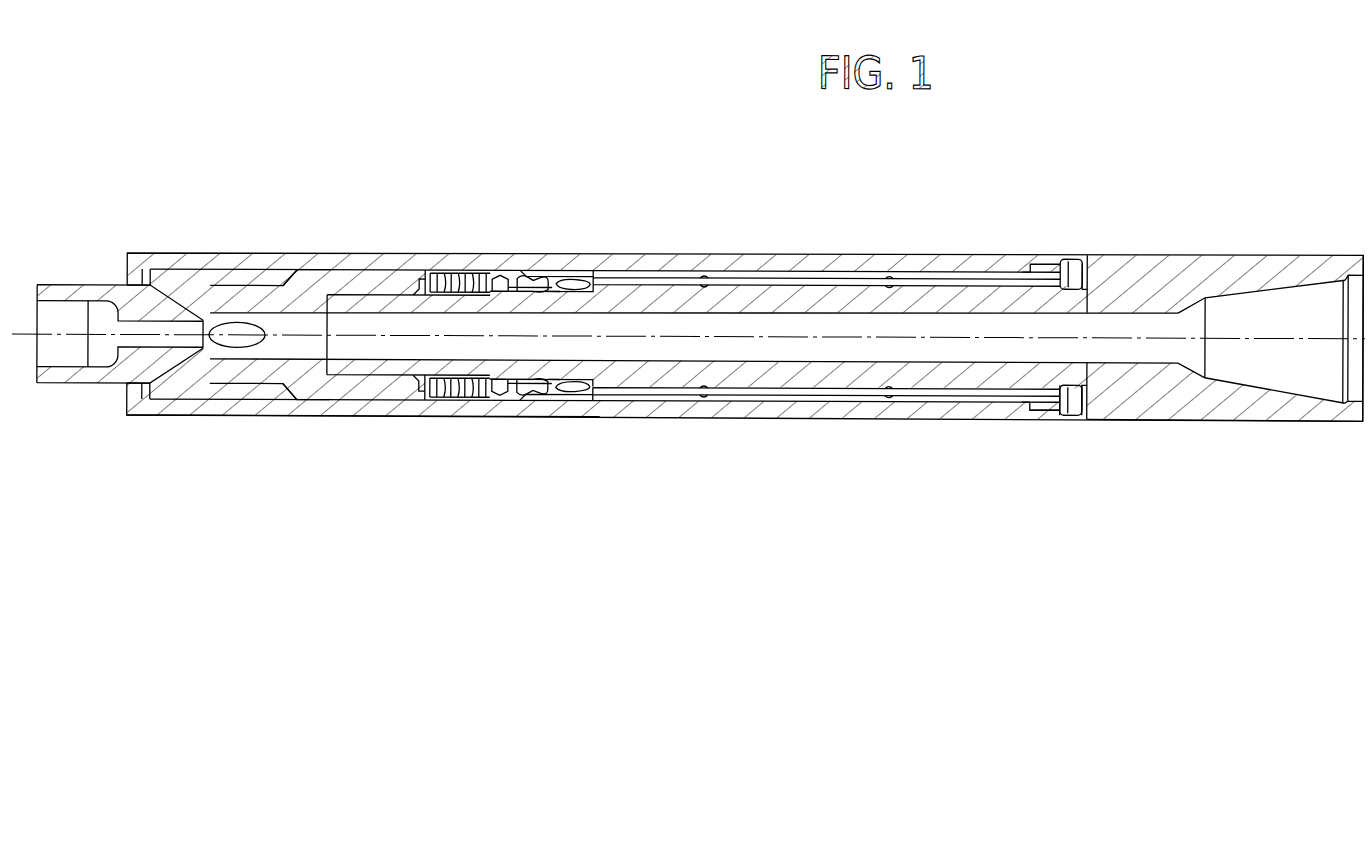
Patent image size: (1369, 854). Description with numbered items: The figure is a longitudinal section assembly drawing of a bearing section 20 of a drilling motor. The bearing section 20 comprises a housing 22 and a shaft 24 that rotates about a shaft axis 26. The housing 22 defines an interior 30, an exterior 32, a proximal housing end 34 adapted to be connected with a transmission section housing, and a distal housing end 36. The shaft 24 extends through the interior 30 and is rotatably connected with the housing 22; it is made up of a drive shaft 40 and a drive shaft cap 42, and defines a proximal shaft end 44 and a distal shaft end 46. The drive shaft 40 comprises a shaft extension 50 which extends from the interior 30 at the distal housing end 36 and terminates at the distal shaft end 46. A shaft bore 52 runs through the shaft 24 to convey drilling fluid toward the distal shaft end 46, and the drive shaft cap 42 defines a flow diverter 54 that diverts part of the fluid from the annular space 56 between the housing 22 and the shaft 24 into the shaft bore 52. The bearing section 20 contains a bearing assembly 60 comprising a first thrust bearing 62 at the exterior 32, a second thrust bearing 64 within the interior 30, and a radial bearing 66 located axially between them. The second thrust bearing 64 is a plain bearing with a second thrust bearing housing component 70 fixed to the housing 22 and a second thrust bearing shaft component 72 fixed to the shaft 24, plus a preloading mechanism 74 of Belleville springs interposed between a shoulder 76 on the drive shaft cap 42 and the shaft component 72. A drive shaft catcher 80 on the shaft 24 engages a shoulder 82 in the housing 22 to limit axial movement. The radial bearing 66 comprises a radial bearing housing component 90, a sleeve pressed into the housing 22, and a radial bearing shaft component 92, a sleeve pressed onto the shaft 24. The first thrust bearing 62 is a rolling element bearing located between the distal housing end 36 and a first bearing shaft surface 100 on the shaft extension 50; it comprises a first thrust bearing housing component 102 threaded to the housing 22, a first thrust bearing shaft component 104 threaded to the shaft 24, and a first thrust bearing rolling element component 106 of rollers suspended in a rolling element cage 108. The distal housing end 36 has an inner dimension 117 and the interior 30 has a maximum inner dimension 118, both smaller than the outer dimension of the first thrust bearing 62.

The bearing section 20 is at (472, 146).
The housing 22 is at (262, 262).
The shaft 24 is at (1195, 262).
The shaft axis 26 is at (1278, 350).
The interior 30 is at (235, 402).
The exterior 32 is at (322, 418).
The proximal housing end 34 is at (127, 256).
The distal housing end 36 is at (1032, 265).
The drive shaft 40 is at (1130, 412).
The drive shaft cap 42 is at (352, 292).
The proximal shaft end 44 is at (42, 390).
The distal shaft end 46 is at (1360, 262).
The shaft extension 50 is at (1282, 262).
The shaft bore 52 is at (65, 312).
The flow diverter 54 is at (205, 300).
The annular space 56 is at (296, 270).
The bearing assembly 60 is at (728, 186).
The first thrust bearing 62 is at (1078, 258).
The second thrust bearing 64 is at (497, 278).
The radial bearing 66 is at (822, 272).
The second thrust bearing housing component 70 is at (512, 398).
The second thrust bearing shaft component 72 is at (493, 402).
The preloading mechanism 74 is at (448, 402).
The shoulder 76 is at (435, 272).
The drive shaft catcher 80 is at (532, 276).
The shoulder 82 is at (572, 279).
The radial bearing housing component 90 is at (718, 402).
The radial bearing shaft component 92 is at (848, 402).
The first bearing shaft surface 100 is at (1075, 414).
The first thrust bearing housing component 102 is at (1045, 410).
The first thrust bearing shaft component 104 is at (1090, 262).
The first thrust bearing rolling element component 106 is at (1062, 414).
The rolling element cage 108 is at (1068, 258).
The inner dimension 117 is at (1025, 262).
The maximum inner dimension 118 is at (276, 405).